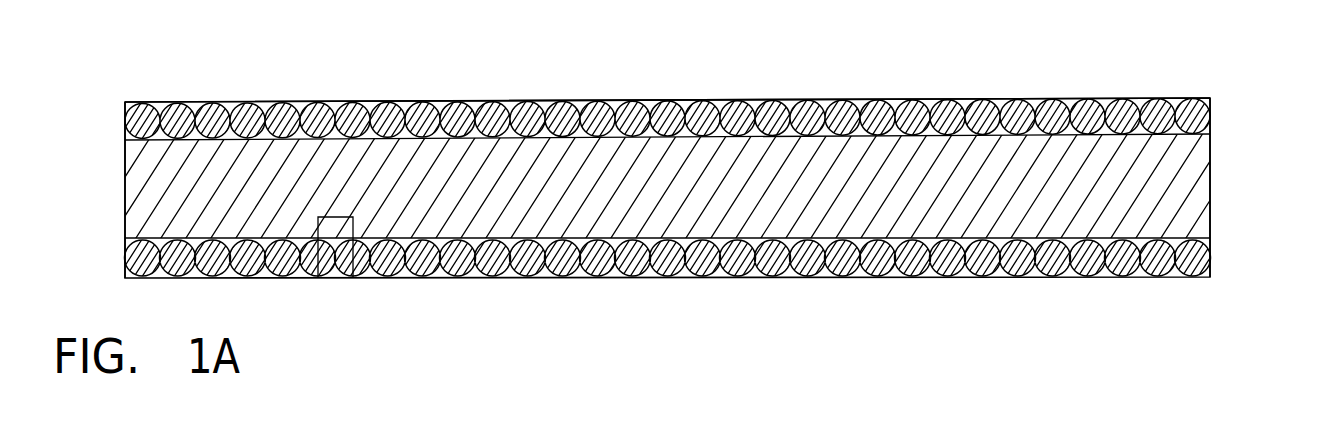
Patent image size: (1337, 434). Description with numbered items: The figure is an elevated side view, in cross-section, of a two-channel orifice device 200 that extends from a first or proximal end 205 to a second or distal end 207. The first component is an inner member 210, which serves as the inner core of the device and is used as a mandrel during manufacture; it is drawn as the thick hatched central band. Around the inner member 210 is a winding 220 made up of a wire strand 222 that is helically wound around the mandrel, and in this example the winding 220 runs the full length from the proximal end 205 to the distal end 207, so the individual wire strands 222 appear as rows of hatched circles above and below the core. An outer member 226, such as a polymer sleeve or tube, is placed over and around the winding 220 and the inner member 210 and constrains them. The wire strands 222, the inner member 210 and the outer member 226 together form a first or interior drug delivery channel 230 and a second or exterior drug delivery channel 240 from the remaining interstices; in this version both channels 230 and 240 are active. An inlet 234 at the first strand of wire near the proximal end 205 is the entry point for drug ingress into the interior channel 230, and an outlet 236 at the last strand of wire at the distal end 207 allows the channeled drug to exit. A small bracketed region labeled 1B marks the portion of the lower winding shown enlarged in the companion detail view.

The orifice device 200 is at (491, 62).
The wire strand 222 is at (297, 102).
The outer member 226 is at (683, 100).
The inner member 210 is at (140, 213).
The winding 220 is at (1014, 279).
The detail region of FIG. 1B is at (385, 283).
The inlet 234 is at (121, 124).
The proximal end 205 is at (123, 162).
The first drug delivery channel 230 is at (123, 245).
The second drug delivery channel 240 is at (1238, 62).
The distal end 207 is at (1284, 178).
The outlet 236 is at (1276, 281).